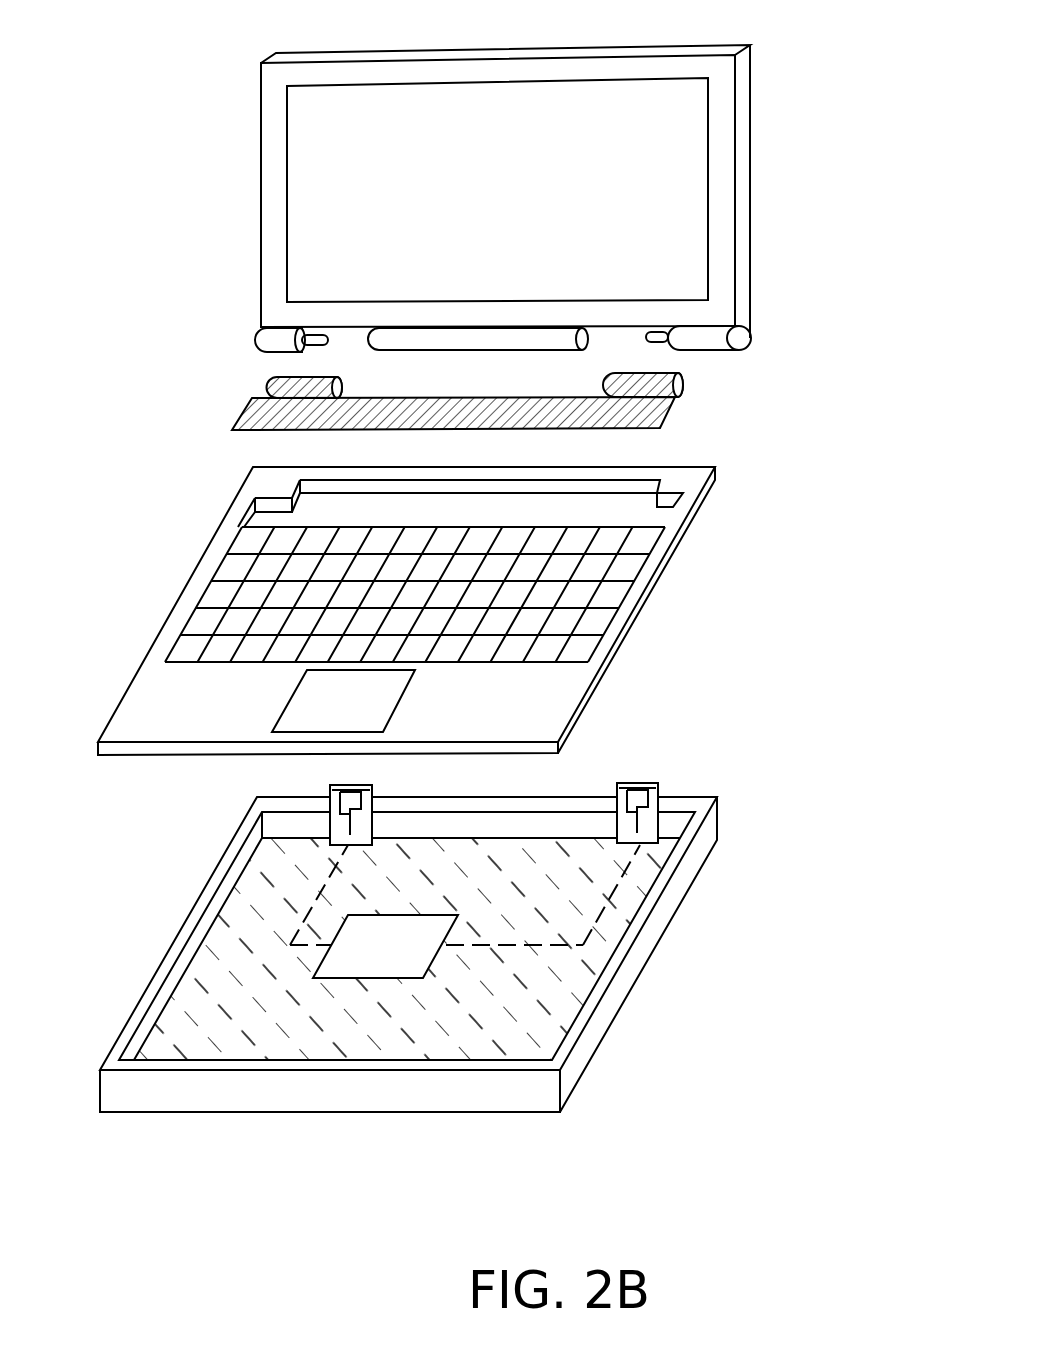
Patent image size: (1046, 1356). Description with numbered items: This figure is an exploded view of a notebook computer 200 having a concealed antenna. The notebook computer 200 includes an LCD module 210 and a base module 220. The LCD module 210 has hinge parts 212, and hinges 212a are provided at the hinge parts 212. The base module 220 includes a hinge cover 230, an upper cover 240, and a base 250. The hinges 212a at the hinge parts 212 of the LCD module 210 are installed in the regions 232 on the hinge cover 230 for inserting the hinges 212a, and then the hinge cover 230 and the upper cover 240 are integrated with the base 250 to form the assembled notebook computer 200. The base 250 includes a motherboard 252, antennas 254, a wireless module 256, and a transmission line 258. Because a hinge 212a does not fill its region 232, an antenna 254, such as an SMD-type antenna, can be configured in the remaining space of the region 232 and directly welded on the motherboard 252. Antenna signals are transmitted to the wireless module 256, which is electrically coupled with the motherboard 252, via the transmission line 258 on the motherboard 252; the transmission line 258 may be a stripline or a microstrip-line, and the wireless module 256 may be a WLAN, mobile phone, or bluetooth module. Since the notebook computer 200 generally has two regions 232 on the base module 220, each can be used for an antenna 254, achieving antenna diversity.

The notebook computer 200 is at (160, 45).
The LCD module 210 is at (750, 148).
The hinge part 212 is at (256, 340).
The hinge 212a is at (314, 334).
The base module 220 is at (806, 467).
The hinge cover 230 is at (668, 414).
The region for inserting the hinge 232 is at (256, 386).
The upper cover 240 is at (173, 608).
The base 250 is at (419, 924).
The motherboard 252 is at (545, 1018).
The antenna 254 is at (357, 793).
The wireless module 256 is at (350, 952).
The transmission line 258 is at (610, 896).